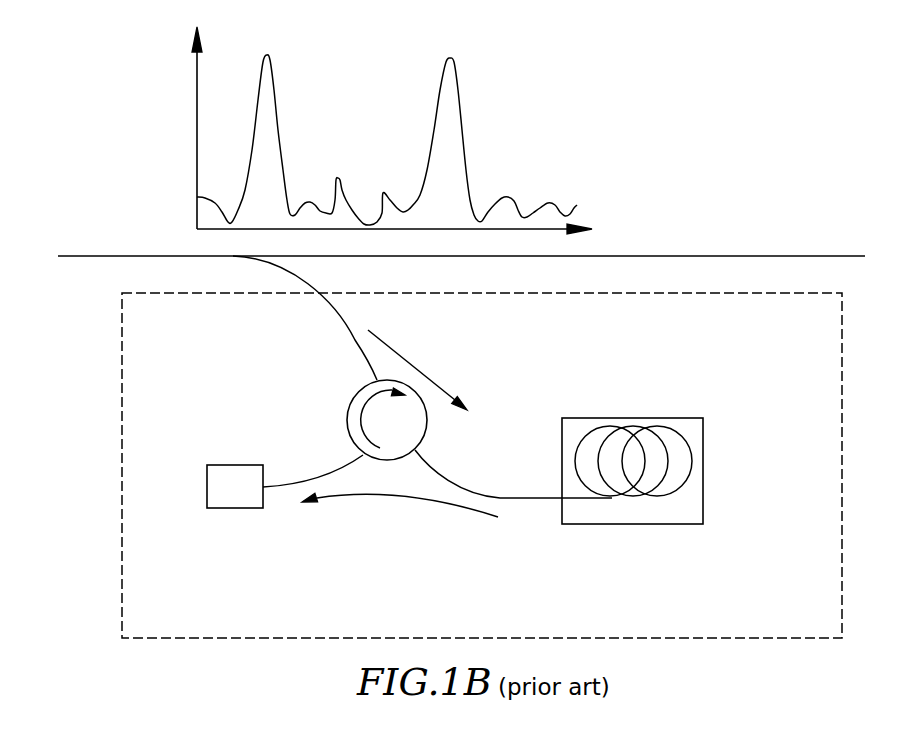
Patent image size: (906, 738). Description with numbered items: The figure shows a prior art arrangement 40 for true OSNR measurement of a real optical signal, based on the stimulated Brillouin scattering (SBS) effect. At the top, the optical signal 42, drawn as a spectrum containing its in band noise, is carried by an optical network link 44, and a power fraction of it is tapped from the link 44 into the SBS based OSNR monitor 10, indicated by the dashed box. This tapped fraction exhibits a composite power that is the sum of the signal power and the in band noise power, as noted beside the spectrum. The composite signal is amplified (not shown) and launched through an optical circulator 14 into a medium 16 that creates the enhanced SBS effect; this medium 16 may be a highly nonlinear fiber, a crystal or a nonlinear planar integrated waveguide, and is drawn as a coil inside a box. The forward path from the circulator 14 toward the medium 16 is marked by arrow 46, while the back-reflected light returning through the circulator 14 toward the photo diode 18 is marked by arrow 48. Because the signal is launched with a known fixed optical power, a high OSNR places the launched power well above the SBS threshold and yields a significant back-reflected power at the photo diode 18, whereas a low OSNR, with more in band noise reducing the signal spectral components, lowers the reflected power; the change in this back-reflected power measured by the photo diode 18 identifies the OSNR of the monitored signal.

The SBS based OSNR monitor 10 is at (171, 624).
The optical circulator 14 is at (352, 400).
The medium 16 is at (724, 564).
The photo diode 18 is at (207, 487).
The prior art arrangement 40 is at (437, 465).
The optical signal 42 is at (485, 115).
The optical network link 44 is at (118, 256).
The forward propagating light 46 is at (418, 368).
The back-scattered light 48 is at (402, 498).